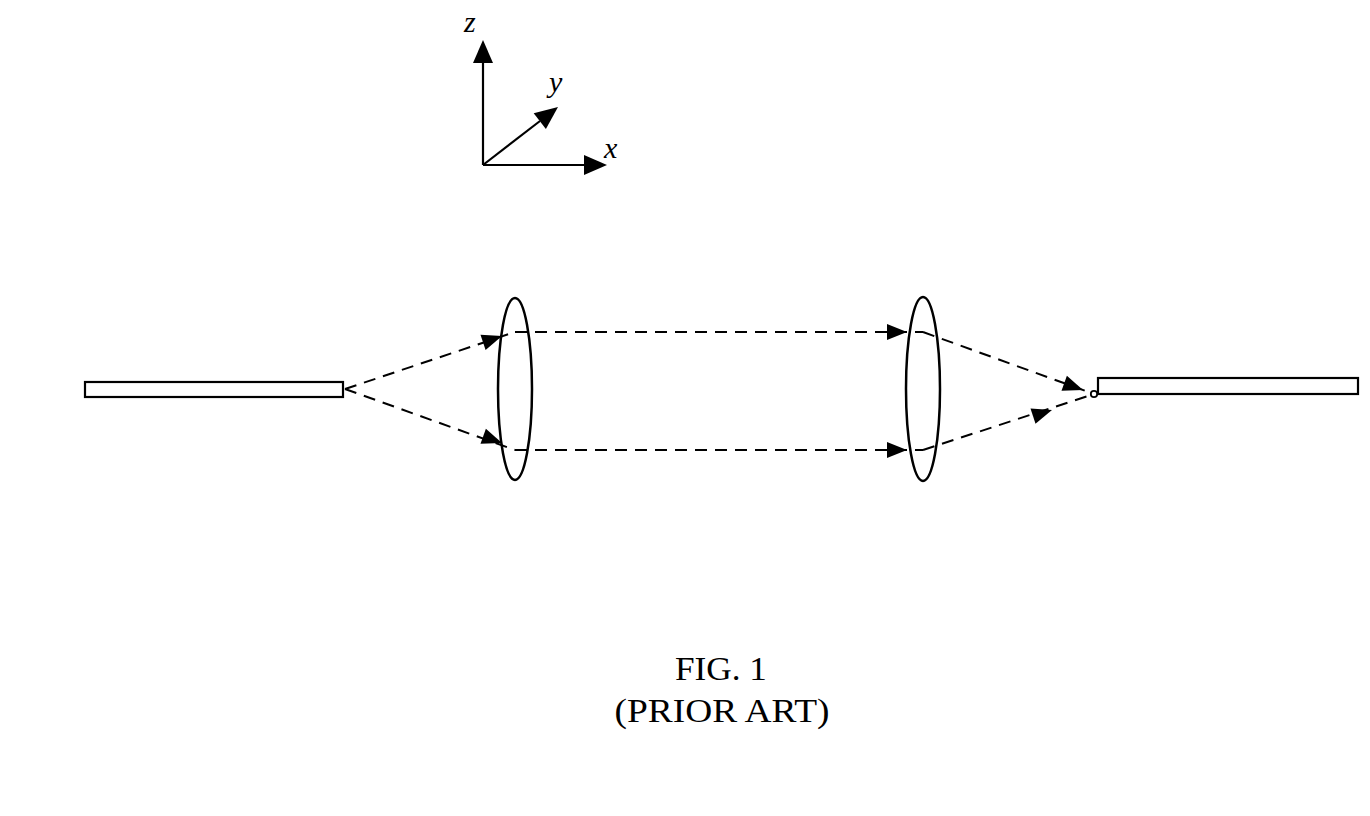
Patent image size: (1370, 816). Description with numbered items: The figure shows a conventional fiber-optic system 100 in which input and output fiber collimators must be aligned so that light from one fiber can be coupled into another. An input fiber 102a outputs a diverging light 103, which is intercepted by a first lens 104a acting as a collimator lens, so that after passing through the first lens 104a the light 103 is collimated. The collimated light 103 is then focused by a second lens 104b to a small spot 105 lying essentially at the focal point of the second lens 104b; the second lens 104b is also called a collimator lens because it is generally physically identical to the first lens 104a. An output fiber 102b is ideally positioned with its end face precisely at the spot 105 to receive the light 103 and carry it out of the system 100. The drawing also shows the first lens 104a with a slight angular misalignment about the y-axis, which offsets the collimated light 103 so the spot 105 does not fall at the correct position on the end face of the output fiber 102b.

The system 100 is at (744, 73).
The input fiber 102a is at (205, 382).
The output fiber 102b is at (1258, 374).
The light 103 is at (763, 348).
The first lens 104a is at (513, 298).
The second lens 104b is at (922, 297).
The spot 105 is at (1094, 397).